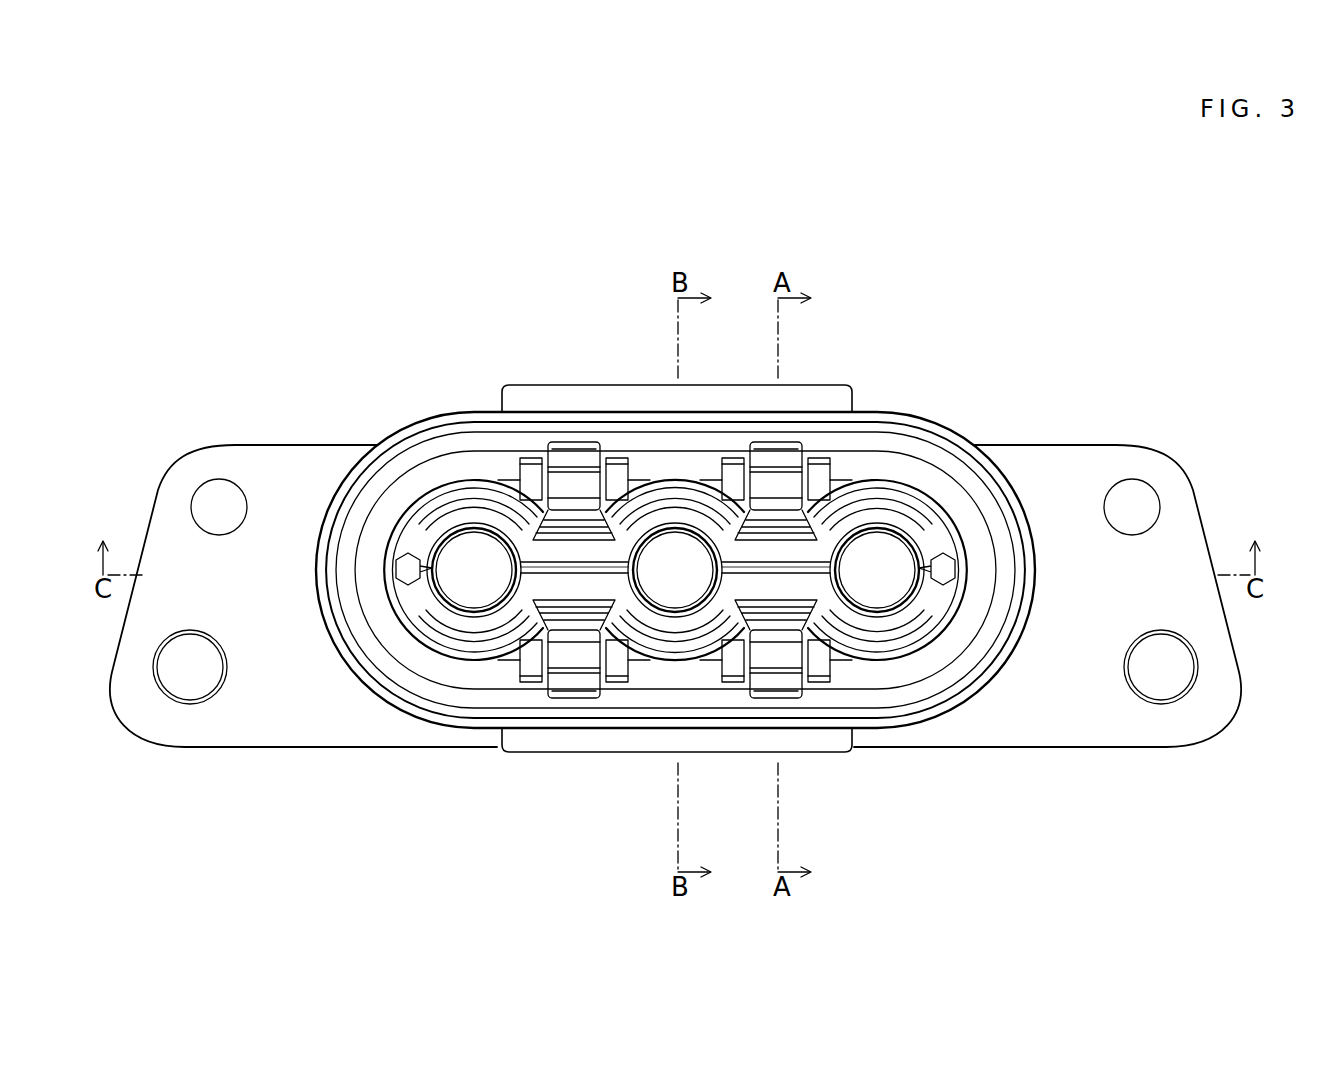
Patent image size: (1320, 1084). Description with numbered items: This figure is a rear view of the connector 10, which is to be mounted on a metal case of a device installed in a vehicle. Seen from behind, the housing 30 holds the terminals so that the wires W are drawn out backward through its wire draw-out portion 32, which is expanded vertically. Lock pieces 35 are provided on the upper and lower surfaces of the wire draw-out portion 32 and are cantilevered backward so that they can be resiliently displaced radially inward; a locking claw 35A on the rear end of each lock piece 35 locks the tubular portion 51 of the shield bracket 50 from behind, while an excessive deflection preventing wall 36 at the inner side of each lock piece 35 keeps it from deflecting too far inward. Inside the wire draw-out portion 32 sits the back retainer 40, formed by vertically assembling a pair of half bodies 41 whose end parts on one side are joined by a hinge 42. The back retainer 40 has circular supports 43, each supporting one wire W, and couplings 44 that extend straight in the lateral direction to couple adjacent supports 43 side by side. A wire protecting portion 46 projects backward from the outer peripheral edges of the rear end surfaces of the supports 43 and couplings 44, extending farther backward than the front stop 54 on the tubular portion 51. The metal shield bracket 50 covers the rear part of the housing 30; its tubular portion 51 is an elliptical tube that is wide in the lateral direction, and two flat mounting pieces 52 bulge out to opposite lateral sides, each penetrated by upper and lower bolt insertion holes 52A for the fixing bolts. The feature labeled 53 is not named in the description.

The connector 10 is at (960, 310).
The housing 30 is at (523, 670).
The wire draw-out portion 32 is at (830, 657).
The lock piece 35 is at (570, 433).
The locking claw 35A is at (787, 453).
The excessive deflection preventing wall 36 is at (765, 503).
The back retainer 40 is at (437, 662).
The half body 41 is at (520, 528).
The hinge 42 is at (390, 577).
The support 43 is at (453, 515).
The coupling 44 is at (785, 548).
The wire protecting portion 46 is at (478, 492).
The shield bracket 50 is at (1045, 755).
The tubular portion 51 is at (457, 714).
The mounting piece 52 is at (292, 473).
The bolt insertion hole 52A is at (215, 495).
The lock engagement edge 53 is at (778, 440).
The front stop 54 is at (418, 478).
The wire W is at (450, 553).